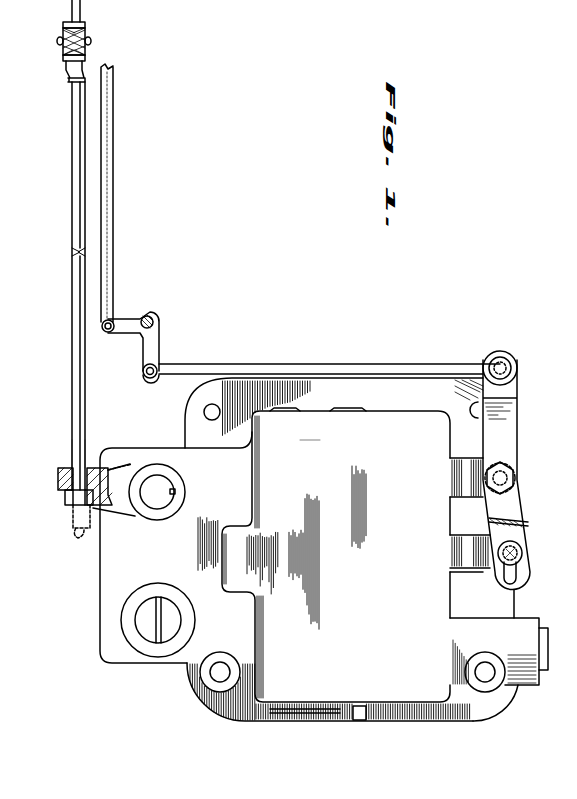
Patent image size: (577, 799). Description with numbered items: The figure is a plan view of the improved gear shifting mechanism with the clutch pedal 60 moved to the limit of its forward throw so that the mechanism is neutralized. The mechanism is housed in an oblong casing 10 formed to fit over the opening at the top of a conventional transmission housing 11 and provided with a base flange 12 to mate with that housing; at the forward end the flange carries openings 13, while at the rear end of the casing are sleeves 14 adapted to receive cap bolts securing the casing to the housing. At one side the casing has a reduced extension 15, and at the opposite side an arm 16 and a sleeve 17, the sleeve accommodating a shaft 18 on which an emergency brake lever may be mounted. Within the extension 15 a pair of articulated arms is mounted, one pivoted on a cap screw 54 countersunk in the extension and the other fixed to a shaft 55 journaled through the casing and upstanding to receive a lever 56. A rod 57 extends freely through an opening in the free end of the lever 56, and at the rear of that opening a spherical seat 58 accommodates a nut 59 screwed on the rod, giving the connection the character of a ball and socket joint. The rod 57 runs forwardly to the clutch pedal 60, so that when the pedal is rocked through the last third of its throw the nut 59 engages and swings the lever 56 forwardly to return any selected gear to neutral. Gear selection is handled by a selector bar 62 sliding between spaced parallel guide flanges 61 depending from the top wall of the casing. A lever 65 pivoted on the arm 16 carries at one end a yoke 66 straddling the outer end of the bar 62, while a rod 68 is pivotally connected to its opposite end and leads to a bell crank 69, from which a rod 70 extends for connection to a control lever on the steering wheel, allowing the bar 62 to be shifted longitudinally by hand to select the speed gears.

The casing 10 is at (335, 559).
The transmission housing 11 is at (210, 680).
The base flange 12 is at (305, 723).
The openings 13 is at (204, 412).
The sleeves 14 is at (486, 680).
The reduced extension 15 is at (100, 582).
The arm 16 is at (462, 490).
The sleeve 17 is at (522, 684).
The shaft 18 is at (545, 665).
The cap screw 54 is at (150, 635).
The shaft 55 is at (158, 498).
The lever 56 is at (112, 508).
The rod 57 is at (72, 418).
The spherical seat 58 is at (58, 478).
The nut 59 is at (70, 505).
The clutch pedal 60 is at (63, 26).
The guide flanges 61 is at (522, 552).
The selector bar 62 is at (462, 570).
The lever 65 is at (512, 437).
The yoke 66 is at (522, 580).
The rod 68 is at (366, 363).
The bell crank 69 is at (155, 343).
The rod 70 is at (112, 240).